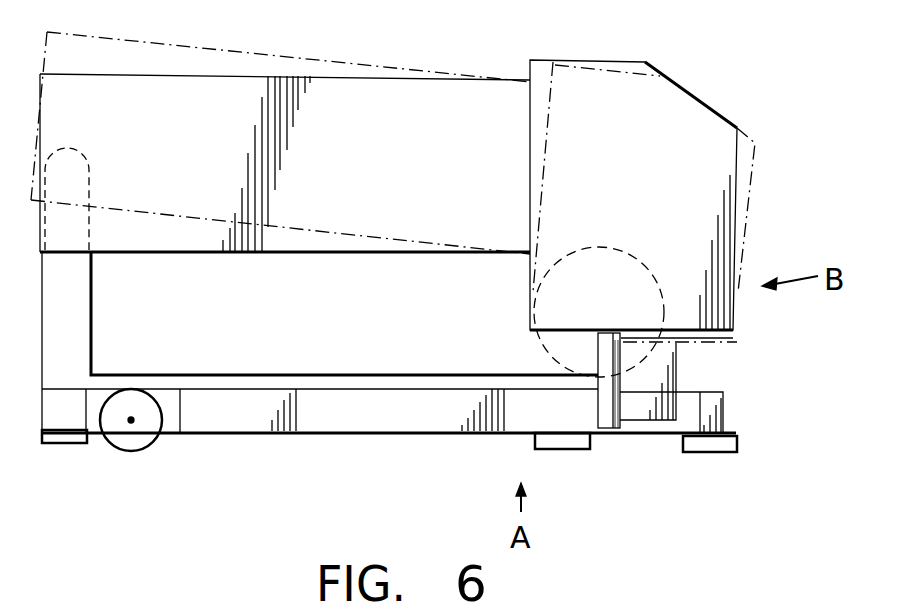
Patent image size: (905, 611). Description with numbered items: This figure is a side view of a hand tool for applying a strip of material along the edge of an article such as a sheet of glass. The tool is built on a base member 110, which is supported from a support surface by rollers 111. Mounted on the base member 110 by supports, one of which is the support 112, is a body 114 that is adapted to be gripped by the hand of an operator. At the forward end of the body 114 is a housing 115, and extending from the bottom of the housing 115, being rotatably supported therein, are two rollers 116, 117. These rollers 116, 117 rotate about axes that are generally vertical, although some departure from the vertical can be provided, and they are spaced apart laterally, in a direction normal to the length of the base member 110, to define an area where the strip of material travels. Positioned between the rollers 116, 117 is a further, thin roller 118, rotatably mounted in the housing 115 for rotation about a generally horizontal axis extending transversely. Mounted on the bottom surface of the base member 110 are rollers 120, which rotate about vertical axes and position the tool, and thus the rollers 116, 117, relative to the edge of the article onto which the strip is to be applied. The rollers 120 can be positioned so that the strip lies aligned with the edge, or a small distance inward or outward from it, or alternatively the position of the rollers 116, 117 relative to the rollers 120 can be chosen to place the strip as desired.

The base member 110 is at (300, 447).
The rollers 111 is at (131, 443).
The support 112 is at (75, 319).
The body 114 is at (395, 105).
The housing 115 is at (683, 130).
The roller 116 is at (612, 384).
The roller 117 is at (667, 408).
The thin roller 118 is at (565, 352).
The rollers 120 is at (57, 435).